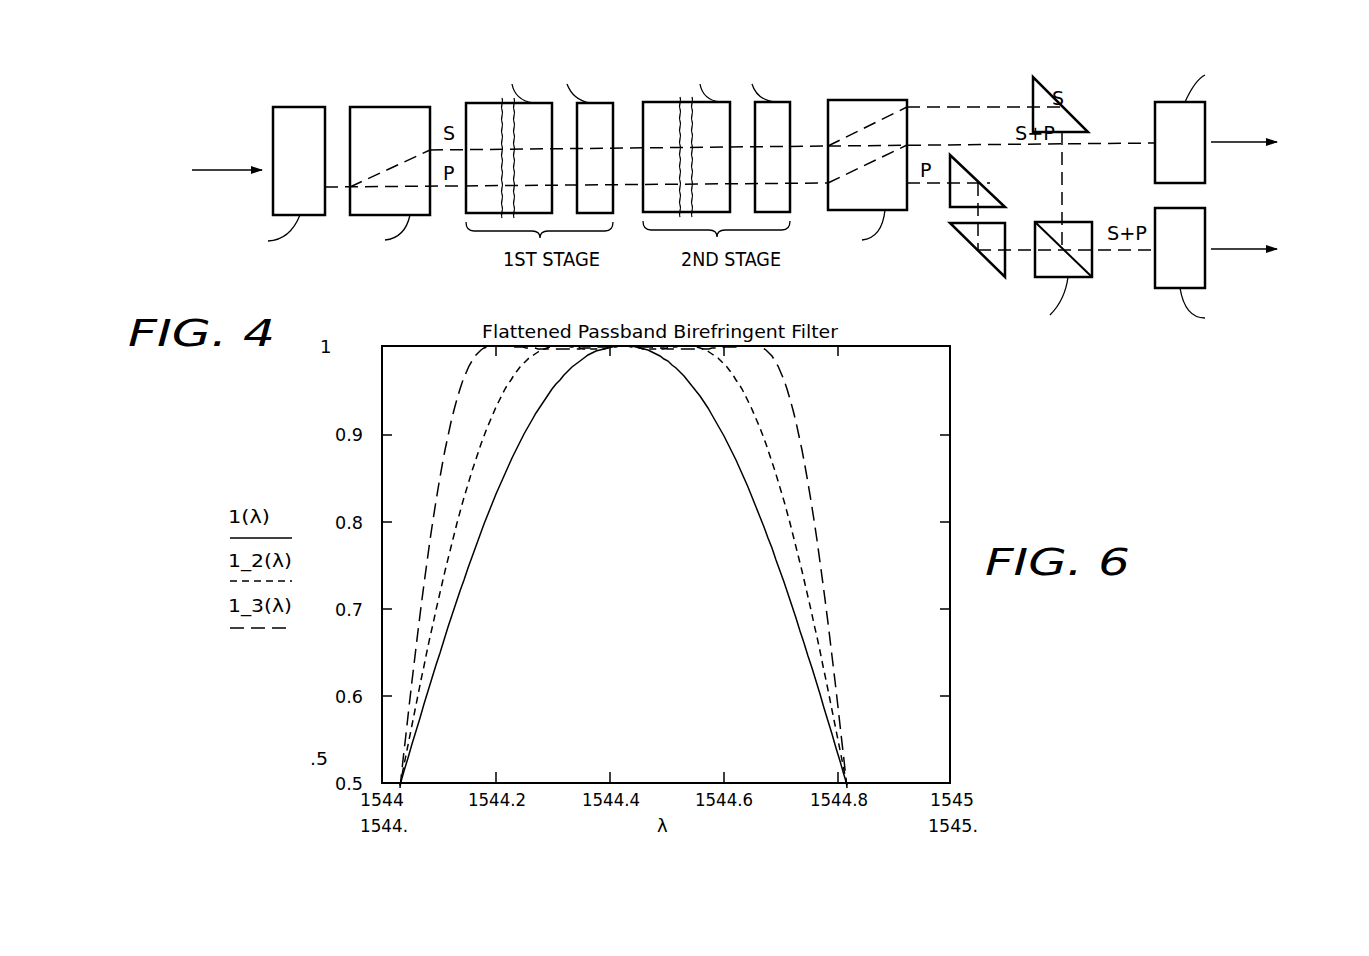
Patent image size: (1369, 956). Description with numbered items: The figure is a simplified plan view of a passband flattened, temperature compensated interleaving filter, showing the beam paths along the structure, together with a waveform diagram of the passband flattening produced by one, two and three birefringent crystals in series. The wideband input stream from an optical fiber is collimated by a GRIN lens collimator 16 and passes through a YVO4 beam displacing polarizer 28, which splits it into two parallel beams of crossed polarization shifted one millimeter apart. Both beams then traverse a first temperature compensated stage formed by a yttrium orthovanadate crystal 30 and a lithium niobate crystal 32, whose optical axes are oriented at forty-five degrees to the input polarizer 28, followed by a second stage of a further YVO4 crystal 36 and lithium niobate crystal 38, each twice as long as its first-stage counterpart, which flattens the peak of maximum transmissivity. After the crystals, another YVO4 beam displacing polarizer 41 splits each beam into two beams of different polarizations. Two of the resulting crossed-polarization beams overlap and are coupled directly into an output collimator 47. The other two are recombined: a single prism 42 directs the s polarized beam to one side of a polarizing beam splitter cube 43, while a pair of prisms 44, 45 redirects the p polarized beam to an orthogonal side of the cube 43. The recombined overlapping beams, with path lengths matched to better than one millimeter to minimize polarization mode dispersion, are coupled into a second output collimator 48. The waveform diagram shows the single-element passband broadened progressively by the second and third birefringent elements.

The collimator 16 is at (296, 107).
The beam displacing polarizer 28 is at (387, 107).
The YVO4 crystal 30 is at (487, 103).
The LiNbO3 crystal 32 is at (603, 103).
The YVO4 crystal 36 is at (678, 102).
The lithium niobate crystal 38 is at (788, 102).
The beam displacing polarizer 41 is at (865, 100).
The prism 42 is at (1052, 96).
The polarizing beam splitter cube 43 is at (1048, 222).
The prism 44 is at (950, 198).
The prism 45 is at (965, 240).
The output collimator 47 is at (1155, 128).
The output collimator 48 is at (1155, 275).